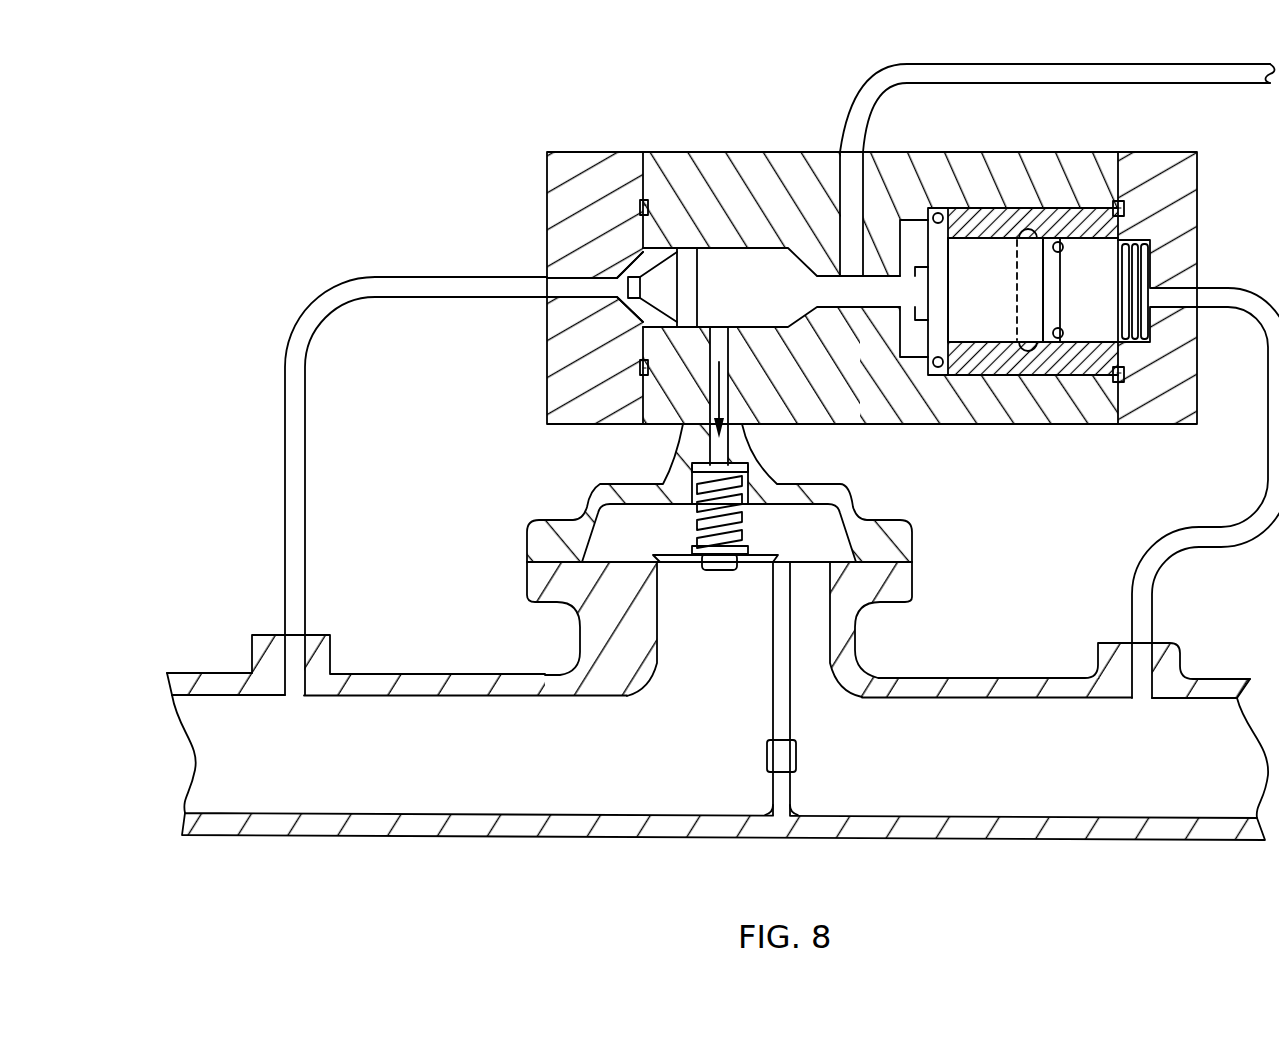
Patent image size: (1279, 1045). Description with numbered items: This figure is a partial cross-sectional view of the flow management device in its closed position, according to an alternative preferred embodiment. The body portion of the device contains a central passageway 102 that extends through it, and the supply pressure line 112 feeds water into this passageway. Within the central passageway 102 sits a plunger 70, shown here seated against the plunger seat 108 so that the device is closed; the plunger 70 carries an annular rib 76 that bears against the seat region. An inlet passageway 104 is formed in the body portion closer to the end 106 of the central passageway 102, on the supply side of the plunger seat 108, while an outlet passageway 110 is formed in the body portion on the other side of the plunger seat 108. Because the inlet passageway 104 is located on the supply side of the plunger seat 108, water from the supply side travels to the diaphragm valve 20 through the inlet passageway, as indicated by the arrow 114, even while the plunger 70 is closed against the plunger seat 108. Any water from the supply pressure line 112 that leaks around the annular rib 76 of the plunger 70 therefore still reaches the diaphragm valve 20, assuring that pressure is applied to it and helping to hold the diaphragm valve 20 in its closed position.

The diaphragm valve 20 is at (965, 503).
The plunger 70 is at (772, 257).
The annular rib 76 is at (652, 312).
The central passageway 102 is at (860, 313).
The inlet passageway 104 is at (729, 444).
The end of the central passageway 106 is at (653, 257).
The plunger seat 108 is at (803, 312).
The outlet passageway 110 is at (657, 152).
The supply pressure line 112 is at (523, 287).
The arrow 114 is at (710, 403).